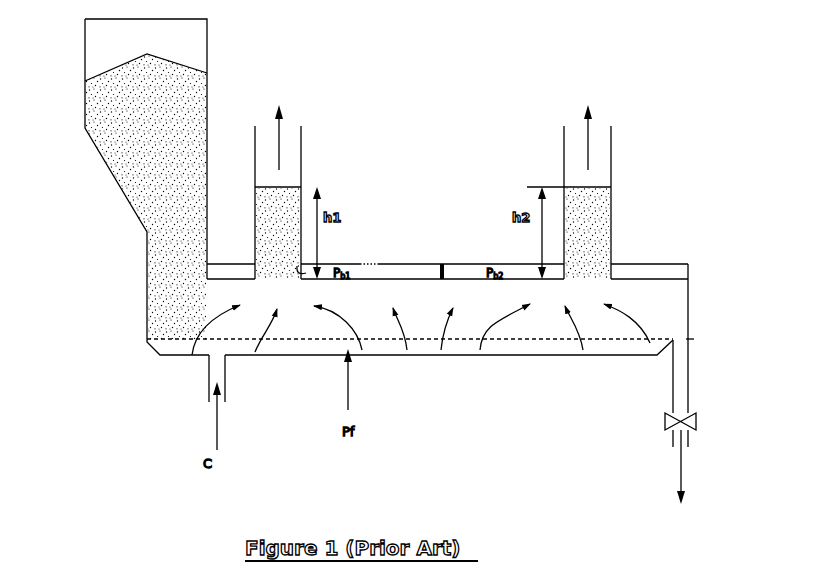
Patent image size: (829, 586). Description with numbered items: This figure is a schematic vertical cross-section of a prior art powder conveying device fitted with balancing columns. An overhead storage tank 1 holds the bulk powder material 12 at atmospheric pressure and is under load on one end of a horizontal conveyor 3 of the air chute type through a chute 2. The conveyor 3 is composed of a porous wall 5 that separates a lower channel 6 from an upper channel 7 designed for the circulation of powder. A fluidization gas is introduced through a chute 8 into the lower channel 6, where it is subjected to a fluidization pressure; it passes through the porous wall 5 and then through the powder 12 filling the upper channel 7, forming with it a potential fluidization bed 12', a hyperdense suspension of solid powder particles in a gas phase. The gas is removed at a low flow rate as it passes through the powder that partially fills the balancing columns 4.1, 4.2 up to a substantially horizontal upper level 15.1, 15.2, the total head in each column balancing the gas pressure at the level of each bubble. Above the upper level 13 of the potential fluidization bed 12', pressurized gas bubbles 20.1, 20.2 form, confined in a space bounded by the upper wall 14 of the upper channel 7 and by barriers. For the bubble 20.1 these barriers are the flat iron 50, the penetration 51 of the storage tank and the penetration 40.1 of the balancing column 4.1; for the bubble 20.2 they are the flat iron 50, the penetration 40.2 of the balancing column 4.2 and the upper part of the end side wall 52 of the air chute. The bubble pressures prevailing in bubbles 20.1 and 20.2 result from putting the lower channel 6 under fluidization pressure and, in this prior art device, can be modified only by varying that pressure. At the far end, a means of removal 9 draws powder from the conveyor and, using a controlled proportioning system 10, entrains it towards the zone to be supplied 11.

The overhead storage tank 1 is at (132, 150).
The chute 2 is at (176, 256).
The conveyor 3 is at (413, 182).
The balancing column 4.1 is at (303, 165).
The balancing column 4.2 is at (612, 168).
The porous wall 5 is at (457, 341).
The lower channel 6 is at (385, 351).
The upper channel 7 is at (300, 313).
The chute 8 is at (209, 374).
The means of removal 9 is at (691, 380).
The controlled proportioning system 10 is at (701, 422).
The zone to be supplied 11 is at (695, 467).
The bulk powder material 12 is at (223, 209).
The potential fluidization bed 12' is at (422, 327).
The upper level 13 is at (471, 277).
The upper wall 14 is at (391, 261).
The upper level 15.1 is at (301, 187).
The upper level 15.2 is at (611, 187).
The gas bubble 20.1 is at (403, 273).
The gas bubble 20.2 is at (660, 264).
The penetration 40.1 is at (298, 265).
The penetration 40.2 is at (612, 267).
The flat iron 50 is at (441, 257).
The penetration 51 is at (210, 272).
The end side wall 52 is at (695, 270).